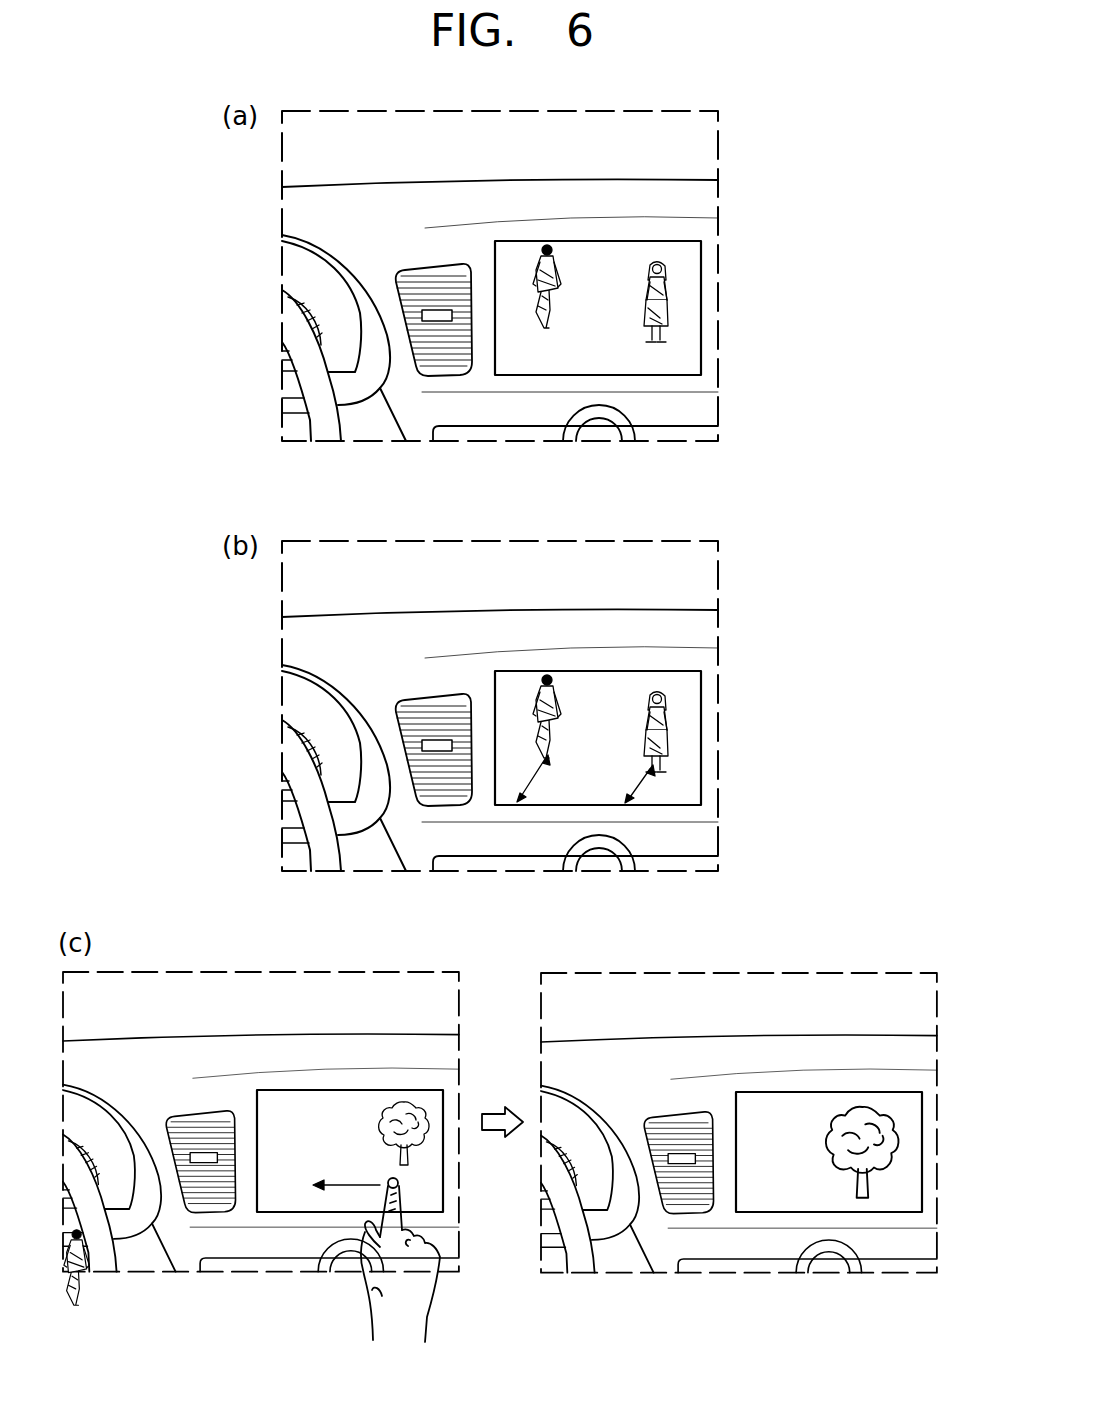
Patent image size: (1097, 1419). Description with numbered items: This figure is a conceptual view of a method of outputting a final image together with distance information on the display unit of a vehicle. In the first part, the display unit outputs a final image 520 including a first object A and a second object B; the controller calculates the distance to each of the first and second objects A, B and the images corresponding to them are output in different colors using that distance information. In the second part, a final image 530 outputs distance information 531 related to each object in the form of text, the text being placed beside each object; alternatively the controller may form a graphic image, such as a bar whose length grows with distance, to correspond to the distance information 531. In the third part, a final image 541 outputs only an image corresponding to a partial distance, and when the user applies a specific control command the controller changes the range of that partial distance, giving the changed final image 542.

The final image 520 is at (690, 258).
The first object A is at (557, 260).
The second object B is at (665, 292).
The final image 530 is at (685, 714).
The distance information 531 is at (565, 798).
The final image 541 is at (337, 1112).
The display screen showing second distance range 542 is at (815, 1113).